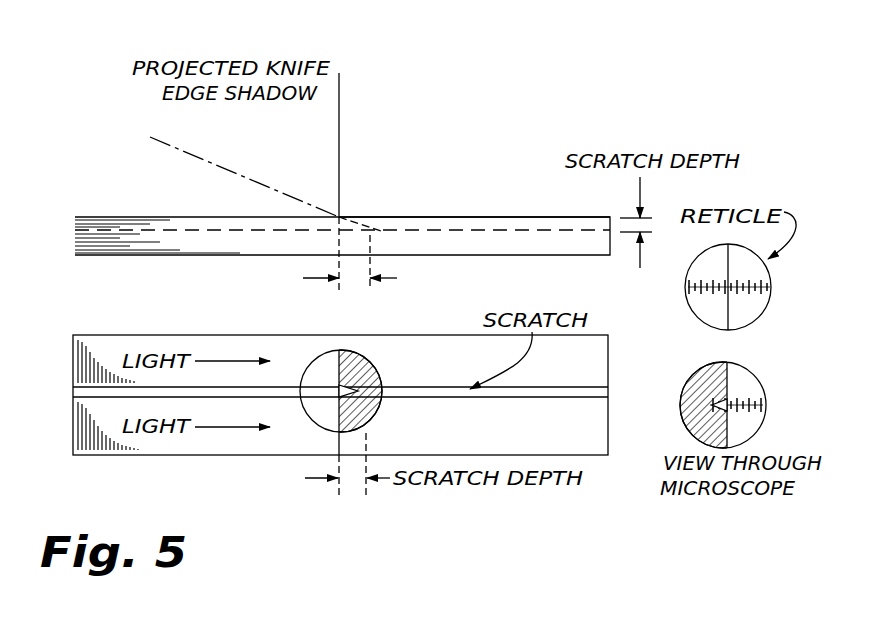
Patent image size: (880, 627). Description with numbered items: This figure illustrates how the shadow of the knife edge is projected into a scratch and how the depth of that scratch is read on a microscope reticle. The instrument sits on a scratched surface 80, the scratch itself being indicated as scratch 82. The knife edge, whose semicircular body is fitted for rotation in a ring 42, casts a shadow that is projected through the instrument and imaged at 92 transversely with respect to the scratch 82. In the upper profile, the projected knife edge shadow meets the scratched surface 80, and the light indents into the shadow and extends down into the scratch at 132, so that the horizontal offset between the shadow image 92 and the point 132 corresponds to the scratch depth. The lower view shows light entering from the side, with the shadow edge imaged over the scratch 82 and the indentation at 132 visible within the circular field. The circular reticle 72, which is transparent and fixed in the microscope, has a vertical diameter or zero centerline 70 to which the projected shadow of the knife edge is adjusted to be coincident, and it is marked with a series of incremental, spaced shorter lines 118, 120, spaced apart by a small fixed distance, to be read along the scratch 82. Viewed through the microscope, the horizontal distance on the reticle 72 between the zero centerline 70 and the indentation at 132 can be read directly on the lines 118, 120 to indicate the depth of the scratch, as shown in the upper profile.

The ring 42 is at (307, 415).
The zero centerline 70 is at (728, 312).
The circular reticle 72 is at (753, 310).
The scratched surface 80 is at (392, 218).
The scratch 82 is at (467, 231).
The shadow image of the knife edge 92 is at (339, 217).
The incremental spaced lines 118 is at (763, 283).
The incremental spaced lines 120 is at (765, 266).
The light indentation into the scratch 132 is at (339, 217).